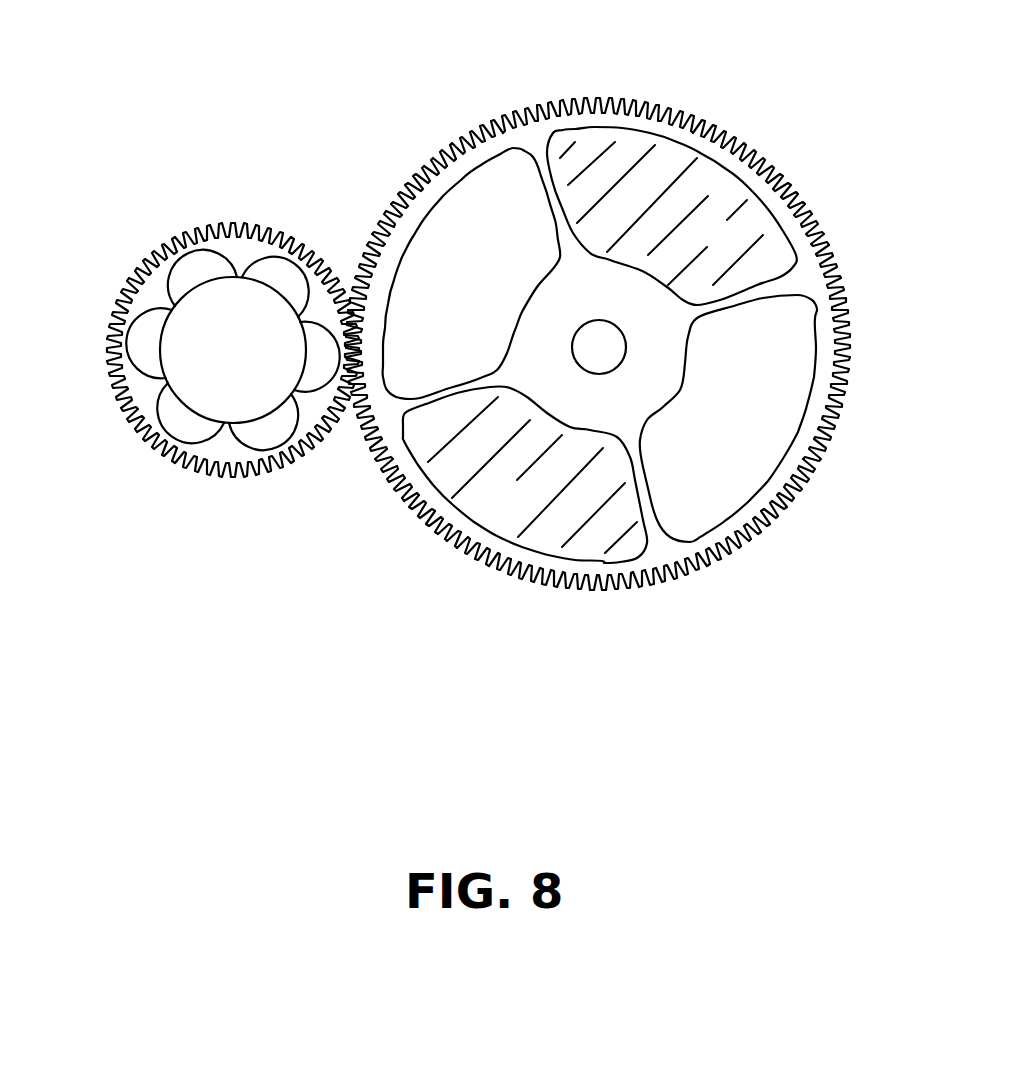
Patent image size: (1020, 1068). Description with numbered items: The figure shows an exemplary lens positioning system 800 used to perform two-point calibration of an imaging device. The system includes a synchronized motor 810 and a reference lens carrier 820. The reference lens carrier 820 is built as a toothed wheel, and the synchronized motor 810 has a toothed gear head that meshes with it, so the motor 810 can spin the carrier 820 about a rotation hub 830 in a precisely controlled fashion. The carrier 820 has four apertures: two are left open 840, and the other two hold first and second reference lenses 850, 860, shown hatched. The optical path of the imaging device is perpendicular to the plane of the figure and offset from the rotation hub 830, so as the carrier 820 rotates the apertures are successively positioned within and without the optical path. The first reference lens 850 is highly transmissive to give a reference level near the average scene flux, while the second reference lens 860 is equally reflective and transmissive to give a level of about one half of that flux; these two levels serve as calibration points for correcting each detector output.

The lens positioning system 800 is at (191, 731).
The synchronized motor 810 is at (163, 238).
The reference lens carrier 820 is at (705, 120).
The rotation hub 830 is at (599, 354).
The open apertures 840 is at (477, 233).
The first reference lens 850 is at (707, 237).
The second reference lens 860 is at (512, 485).